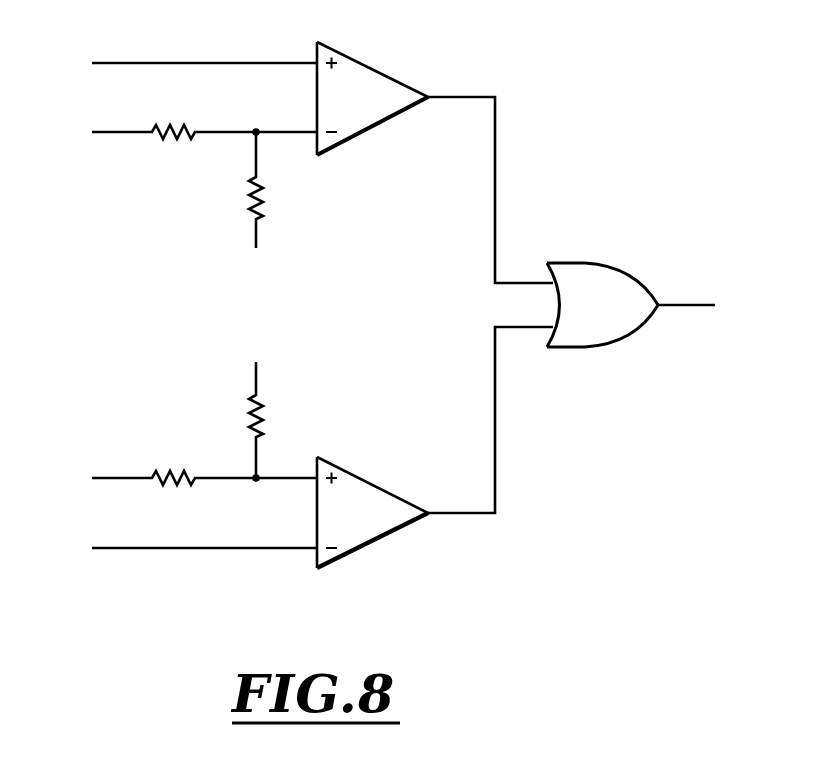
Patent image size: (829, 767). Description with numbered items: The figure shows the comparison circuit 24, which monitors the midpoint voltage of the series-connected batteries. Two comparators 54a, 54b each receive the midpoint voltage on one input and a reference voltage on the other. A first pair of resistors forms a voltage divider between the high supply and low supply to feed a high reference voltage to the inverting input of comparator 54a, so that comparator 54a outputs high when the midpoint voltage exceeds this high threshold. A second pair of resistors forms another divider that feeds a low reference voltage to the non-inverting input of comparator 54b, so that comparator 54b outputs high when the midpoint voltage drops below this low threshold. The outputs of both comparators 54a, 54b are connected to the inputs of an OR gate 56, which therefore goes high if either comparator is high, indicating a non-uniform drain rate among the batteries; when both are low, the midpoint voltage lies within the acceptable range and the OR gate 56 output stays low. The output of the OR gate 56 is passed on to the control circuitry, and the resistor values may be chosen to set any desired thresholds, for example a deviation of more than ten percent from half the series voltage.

The comparison circuit 24 is at (640, 83).
The comparator 54a is at (400, 80).
The comparator 54b is at (400, 495).
The OR gate 56 is at (600, 277).